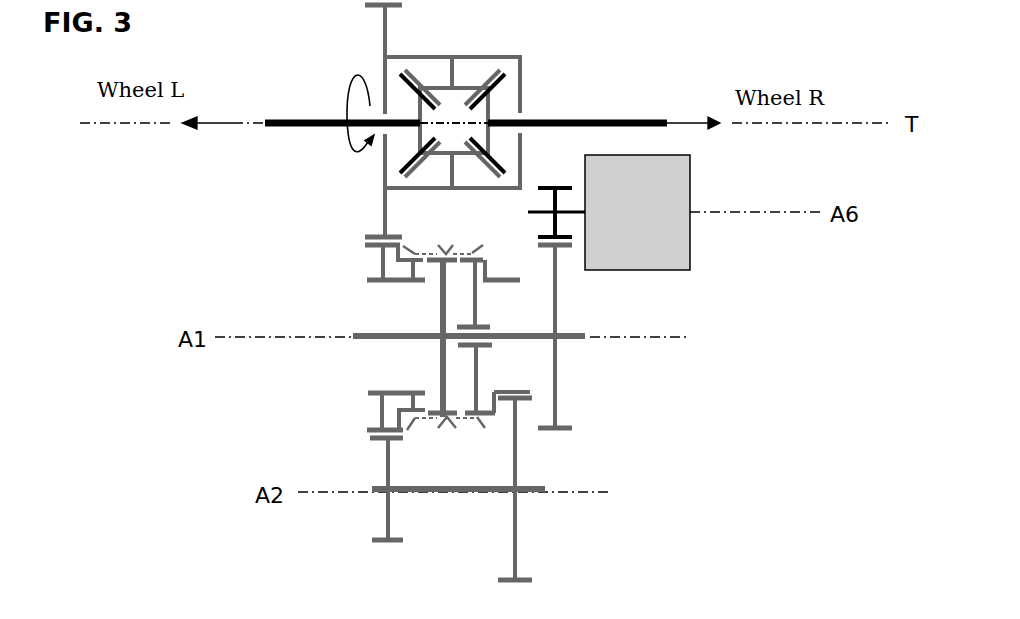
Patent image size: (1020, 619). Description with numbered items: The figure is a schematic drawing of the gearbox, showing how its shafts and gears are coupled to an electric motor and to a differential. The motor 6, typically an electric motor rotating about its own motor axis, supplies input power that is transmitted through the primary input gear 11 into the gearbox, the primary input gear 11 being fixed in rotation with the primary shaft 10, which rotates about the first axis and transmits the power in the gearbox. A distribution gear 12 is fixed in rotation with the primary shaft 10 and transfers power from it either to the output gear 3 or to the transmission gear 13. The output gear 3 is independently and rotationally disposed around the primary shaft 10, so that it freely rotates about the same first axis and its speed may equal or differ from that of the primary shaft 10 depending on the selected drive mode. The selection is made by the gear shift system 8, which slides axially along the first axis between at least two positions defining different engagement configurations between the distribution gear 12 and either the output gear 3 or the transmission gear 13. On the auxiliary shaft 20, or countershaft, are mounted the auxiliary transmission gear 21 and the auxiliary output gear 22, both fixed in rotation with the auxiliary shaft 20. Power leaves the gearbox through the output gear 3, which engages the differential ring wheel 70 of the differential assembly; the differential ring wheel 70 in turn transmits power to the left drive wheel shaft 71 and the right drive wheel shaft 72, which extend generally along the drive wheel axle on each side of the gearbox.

The output gear 3 is at (368, 407).
The motor 6 is at (701, 236).
The gear shift system 8 is at (457, 244).
The primary shaft 10 is at (684, 314).
The primary input gear 11 is at (553, 418).
The distribution gear 12 is at (438, 313).
The transmission gear 13 is at (497, 277).
The auxiliary shaft 20 is at (599, 470).
The auxiliary transmission gear 21 is at (512, 548).
The auxiliary output gear 22 is at (380, 529).
The differential ring wheel 70 is at (416, 121).
The left drive wheel shaft 71 is at (290, 118).
The right drive wheel shaft 72 is at (598, 120).